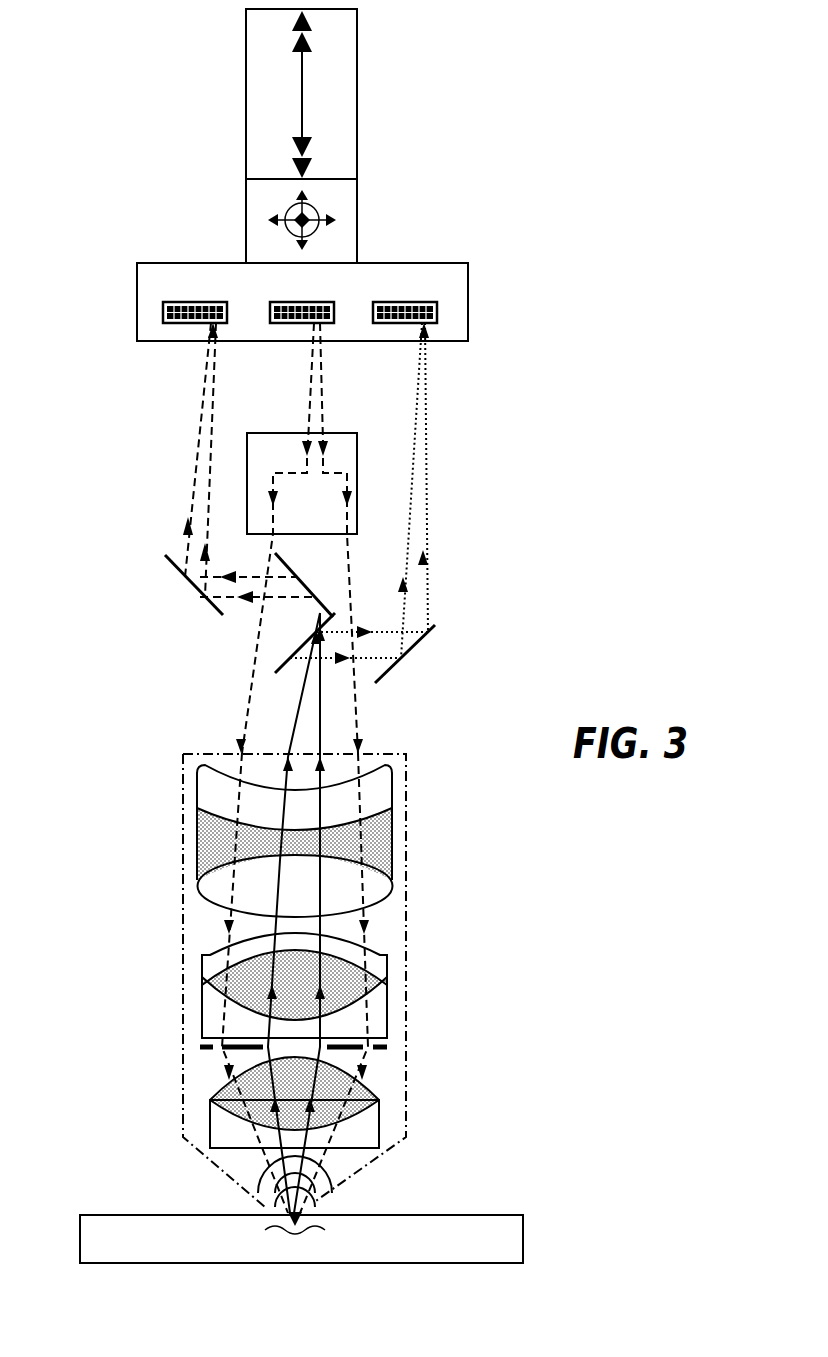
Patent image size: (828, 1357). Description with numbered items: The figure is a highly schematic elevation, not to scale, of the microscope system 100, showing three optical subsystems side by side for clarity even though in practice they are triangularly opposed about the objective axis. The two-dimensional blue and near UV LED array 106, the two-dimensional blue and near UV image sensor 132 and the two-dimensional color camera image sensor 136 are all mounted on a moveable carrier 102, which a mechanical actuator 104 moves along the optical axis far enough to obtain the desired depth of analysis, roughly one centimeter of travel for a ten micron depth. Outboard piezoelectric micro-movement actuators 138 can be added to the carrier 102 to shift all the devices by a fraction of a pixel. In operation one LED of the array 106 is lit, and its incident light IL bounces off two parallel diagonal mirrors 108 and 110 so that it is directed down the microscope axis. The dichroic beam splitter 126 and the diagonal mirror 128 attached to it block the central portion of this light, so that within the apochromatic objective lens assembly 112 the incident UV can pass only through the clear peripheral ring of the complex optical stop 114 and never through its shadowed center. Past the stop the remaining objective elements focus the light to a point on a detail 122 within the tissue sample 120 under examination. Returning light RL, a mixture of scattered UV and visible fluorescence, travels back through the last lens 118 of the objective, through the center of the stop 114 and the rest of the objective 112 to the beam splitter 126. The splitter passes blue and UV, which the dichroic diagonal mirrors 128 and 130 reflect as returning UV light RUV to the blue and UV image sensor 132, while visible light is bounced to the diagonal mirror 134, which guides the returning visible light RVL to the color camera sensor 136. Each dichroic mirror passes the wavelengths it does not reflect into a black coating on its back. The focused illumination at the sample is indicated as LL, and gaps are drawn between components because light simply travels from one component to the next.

The microscope system 100 is at (521, 70).
The carrier 102 is at (468, 292).
The mechanical actuator 104 is at (357, 90).
The 2D blue and near UV multicolor LED array 106 is at (313, 302).
The diagonal mirror 108 is at (295, 471).
The diagonal mirror 110 is at (297, 432).
The objective lens assembly 112 is at (183, 945).
The complex optical stop 114 is at (404, 1047).
The last lens in the objective lens assembly 118 is at (330, 1196).
The tissue sample 120 is at (458, 1215).
The detail 122 is at (312, 1232).
The dichroic beam splitter 126 is at (290, 658).
The diagonal mirror 128 is at (283, 558).
The diagonal mirror 130 is at (188, 580).
The 2D blue and near UV image sensor 132 is at (213, 302).
The diagonal mirror 134 is at (413, 647).
The 2D color camera image sensor 136 is at (400, 302).
The micro-movement actuators 138 is at (318, 212).
The illumination light IL is at (312, 413).
The reflected light RL is at (292, 718).
The reflected UV light RUV is at (195, 518).
The reflected visible light RVL is at (413, 502).
The laser light LL is at (262, 1213).